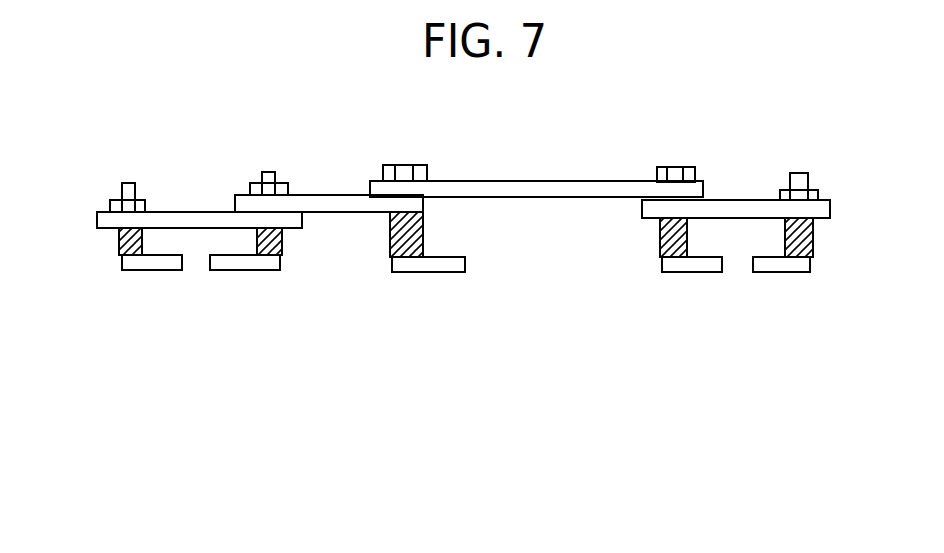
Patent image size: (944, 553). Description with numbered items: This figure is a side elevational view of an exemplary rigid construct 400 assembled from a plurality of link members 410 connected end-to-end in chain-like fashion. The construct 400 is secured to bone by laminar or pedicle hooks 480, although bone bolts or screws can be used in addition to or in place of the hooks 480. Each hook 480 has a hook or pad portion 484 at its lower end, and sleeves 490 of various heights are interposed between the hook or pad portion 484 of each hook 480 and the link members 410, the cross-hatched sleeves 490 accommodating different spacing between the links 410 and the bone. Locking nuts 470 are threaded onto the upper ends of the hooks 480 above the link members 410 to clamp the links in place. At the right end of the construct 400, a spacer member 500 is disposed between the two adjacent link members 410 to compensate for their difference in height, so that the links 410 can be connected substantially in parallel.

The rigid construct 400 is at (596, 360).
The link member 410 is at (203, 218).
The locking nut 470 is at (145, 200).
The laminar or pedicle hook 480 is at (127, 282).
The hook or pad portion 484 is at (153, 267).
The sleeve 490 is at (118, 243).
The spacer member 500 is at (706, 194).